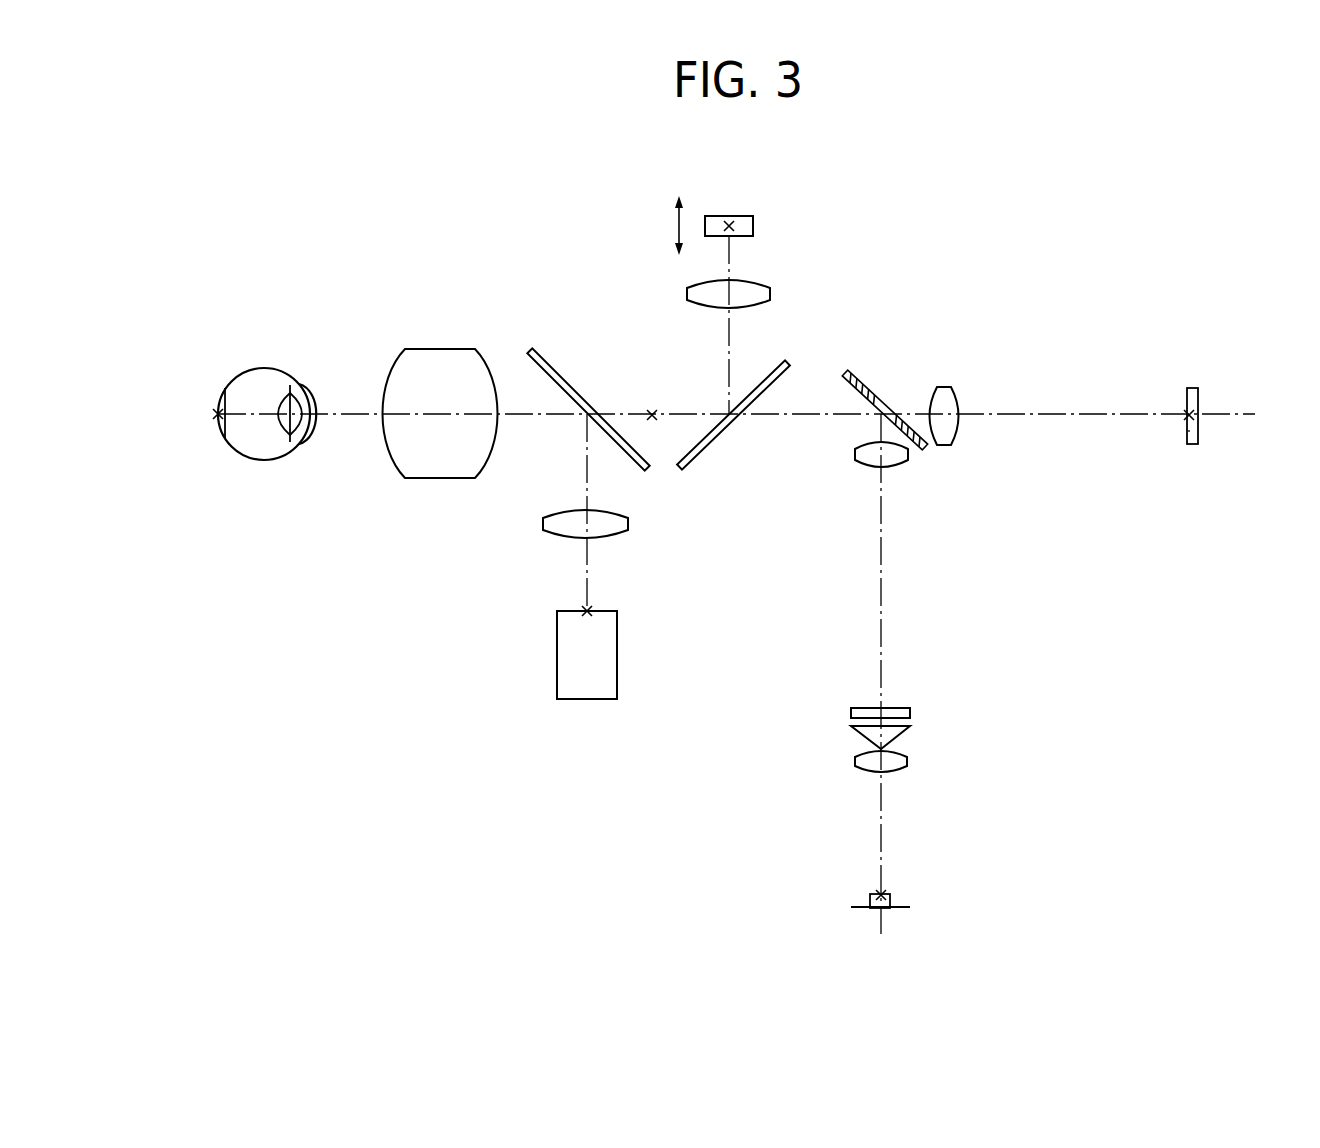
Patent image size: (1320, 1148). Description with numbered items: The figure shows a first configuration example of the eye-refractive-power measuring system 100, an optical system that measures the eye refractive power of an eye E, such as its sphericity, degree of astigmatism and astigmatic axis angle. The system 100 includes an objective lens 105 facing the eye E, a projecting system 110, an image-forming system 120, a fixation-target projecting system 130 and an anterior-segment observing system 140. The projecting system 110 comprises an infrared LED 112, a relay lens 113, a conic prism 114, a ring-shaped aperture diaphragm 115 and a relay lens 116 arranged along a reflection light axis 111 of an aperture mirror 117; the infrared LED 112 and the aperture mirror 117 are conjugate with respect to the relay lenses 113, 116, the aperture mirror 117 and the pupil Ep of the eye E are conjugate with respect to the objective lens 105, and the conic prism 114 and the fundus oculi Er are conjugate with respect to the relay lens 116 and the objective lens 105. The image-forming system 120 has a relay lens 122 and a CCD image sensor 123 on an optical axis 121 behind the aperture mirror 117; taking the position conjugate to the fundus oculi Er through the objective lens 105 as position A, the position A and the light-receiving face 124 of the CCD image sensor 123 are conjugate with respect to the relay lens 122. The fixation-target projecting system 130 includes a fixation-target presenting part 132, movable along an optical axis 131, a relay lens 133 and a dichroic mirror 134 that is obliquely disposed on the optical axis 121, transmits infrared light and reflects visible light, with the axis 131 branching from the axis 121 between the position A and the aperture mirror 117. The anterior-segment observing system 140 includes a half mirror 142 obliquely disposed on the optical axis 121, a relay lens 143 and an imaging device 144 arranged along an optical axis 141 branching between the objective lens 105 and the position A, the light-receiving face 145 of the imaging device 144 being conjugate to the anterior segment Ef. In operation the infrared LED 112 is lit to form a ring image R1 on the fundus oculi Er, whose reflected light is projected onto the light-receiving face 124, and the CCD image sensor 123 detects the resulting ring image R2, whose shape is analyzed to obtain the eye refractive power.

The eye-refractive-power measuring system 100 is at (1070, 257).
The objective lens 105 is at (430, 360).
The projecting system 110 is at (843, 838).
The reflection light axis 111 is at (882, 611).
The infrared LED 112 is at (892, 900).
The relay lens 113 is at (907, 758).
The conic prism 114 is at (910, 728).
The ring-shaped aperture diaphragm 115 is at (912, 713).
The relay lens 116 is at (908, 455).
The aperture mirror 117 is at (850, 372).
The image-forming system 120 is at (1109, 452).
The optical axis 121 is at (552, 416).
The relay lens 122 is at (953, 388).
The CCD image sensor 123 is at (1190, 388).
The light-receiving face 124 is at (1188, 418).
The fixation-target projecting system 130 is at (643, 248).
The optical axis 131 is at (737, 267).
The fixation-target presenting part 132 is at (729, 216).
The relay lens 133 is at (690, 294).
The dichroic mirror 134 is at (785, 362).
The anterior-segment observing system 140 is at (522, 567).
The optical axis 141 is at (585, 572).
The half mirror 142 is at (530, 352).
The relay lens 143 is at (628, 522).
The imaging device 144 is at (617, 660).
The light-receiving face 145 is at (596, 608).
The eye E is at (265, 360).
The anterior segment Ef is at (304, 380).
The pupil Ep is at (298, 428).
The fundus oculi Er is at (218, 416).
The ring image R1 is at (222, 390).
The ring image R2 is at (1190, 435).
The position A is at (653, 433).